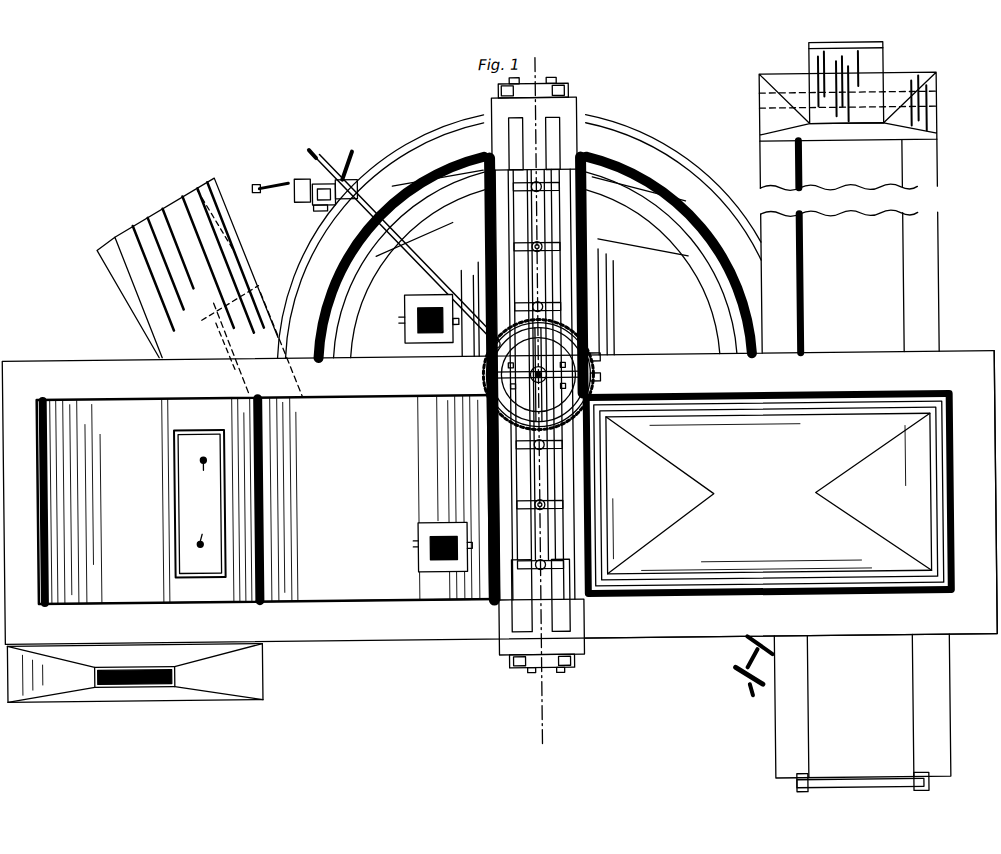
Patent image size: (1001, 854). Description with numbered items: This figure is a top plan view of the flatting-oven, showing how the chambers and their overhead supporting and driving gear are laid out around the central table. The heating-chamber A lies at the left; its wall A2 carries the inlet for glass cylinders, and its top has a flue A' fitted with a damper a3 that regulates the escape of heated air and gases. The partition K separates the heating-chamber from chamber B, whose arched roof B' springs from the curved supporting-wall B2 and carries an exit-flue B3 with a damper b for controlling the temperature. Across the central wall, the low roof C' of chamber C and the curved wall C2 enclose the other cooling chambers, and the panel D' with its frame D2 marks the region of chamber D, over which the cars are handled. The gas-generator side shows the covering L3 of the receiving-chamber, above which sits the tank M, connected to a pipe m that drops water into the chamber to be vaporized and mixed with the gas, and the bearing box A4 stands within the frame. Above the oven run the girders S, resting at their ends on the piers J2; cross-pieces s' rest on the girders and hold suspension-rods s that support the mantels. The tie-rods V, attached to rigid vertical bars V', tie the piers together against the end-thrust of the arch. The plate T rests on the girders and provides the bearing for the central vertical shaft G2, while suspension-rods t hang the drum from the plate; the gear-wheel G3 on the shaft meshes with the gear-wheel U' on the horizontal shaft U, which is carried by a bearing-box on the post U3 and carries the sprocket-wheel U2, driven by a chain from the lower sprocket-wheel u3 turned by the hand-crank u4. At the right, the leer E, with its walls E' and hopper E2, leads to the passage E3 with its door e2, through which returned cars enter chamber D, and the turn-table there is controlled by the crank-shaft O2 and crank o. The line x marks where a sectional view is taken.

The partition K is at (500, 527).
The flue A' is at (268, 499).
The top or covering of the receiving-chamber L3 is at (151, 501).
The tank M is at (200, 504).
The pipe m is at (204, 502).
The bearing box A4 is at (417, 541).
The damper a3 is at (445, 526).
The wall of the heating-chamber A2 is at (268, 463).
The curved supporting-wall B2 is at (385, 359).
The drum casing C2 is at (671, 253).
The arched roof B' is at (401, 257).
The low roof C' is at (669, 255).
The heating-chamber A is at (187, 275).
The shaft U is at (404, 246).
The sprocket-wheel U2 is at (311, 180).
The post U3 is at (359, 174).
The hand-crank u4 is at (269, 181).
The sprocket-wheel u3 is at (309, 215).
The gear-wheel U' is at (475, 340).
The exit-flue B3 is at (406, 322).
The damper b is at (433, 342).
The piers J2 is at (537, 376).
The girders S is at (533, 364).
The cross-pieces s' is at (539, 376).
The suspension-rods s is at (546, 376).
The section line x is at (535, 410).
The tie-rods V is at (539, 383).
The rigid vertical bars V' is at (545, 377).
The plate T is at (538, 374).
The vertical suspension-rods t is at (538, 374).
The central vertical shaft G2 is at (601, 358).
The gear-wheel G3 is at (601, 378).
The platform panel D' is at (768, 494).
The platform frame D2 is at (789, 495).
The leer or annealing-oven E is at (857, 246).
The elevator walls E' is at (843, 246).
The elevator hopper E2 is at (849, 175).
The passage E3 is at (862, 706).
The door e2 is at (863, 788).
The crank-shaft O2 is at (748, 658).
The crank o is at (745, 691).